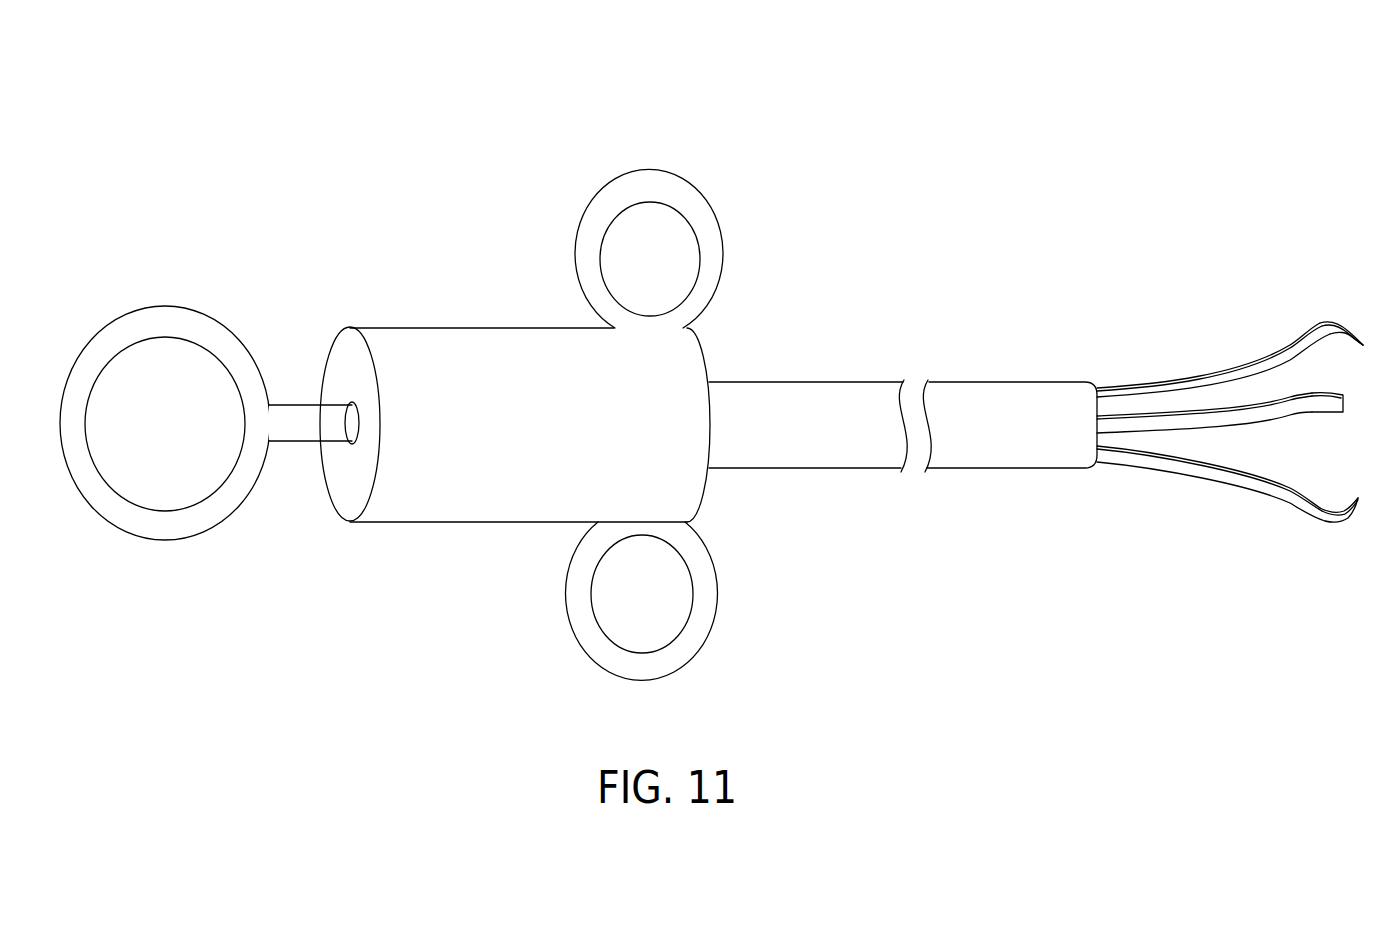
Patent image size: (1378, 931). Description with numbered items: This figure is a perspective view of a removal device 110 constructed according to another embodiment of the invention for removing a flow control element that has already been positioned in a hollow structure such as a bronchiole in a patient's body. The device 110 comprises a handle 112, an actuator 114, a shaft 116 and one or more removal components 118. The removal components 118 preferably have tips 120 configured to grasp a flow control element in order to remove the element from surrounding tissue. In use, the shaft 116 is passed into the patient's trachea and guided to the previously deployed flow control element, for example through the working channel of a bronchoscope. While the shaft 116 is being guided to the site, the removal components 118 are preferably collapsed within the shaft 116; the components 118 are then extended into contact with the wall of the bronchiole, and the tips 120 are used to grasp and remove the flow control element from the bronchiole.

The device 110 is at (446, 152).
The handle 112 is at (416, 503).
The actuator 114 is at (168, 527).
The shaft 116 is at (843, 450).
The removal components 118 is at (1233, 470).
The tips 120 is at (1343, 512).